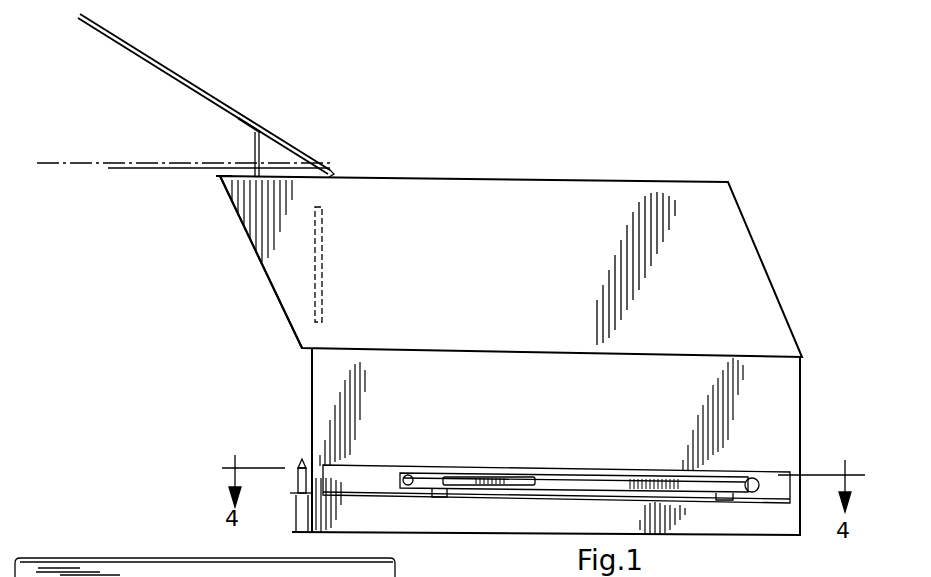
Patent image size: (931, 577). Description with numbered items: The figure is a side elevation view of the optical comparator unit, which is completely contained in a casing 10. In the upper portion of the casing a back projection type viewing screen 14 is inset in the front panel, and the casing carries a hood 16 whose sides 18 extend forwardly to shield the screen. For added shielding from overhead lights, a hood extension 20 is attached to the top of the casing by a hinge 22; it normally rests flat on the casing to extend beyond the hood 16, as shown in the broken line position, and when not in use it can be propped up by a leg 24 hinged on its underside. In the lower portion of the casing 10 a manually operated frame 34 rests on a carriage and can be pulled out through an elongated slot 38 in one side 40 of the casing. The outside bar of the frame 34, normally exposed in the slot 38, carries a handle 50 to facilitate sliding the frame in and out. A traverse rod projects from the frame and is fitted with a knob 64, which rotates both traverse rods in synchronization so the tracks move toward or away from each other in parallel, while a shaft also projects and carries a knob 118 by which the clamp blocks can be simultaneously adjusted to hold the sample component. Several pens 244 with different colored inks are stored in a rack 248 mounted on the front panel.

The casing 10 is at (514, 355).
The back projection type viewing screen 14 is at (320, 267).
The hood 16 is at (229, 174).
The sides 18 is at (259, 256).
The hood extension 20 is at (198, 88).
The hinge 22 is at (331, 170).
The leg 24 is at (262, 136).
The frame 34 is at (574, 459).
The elongated slot 38 is at (372, 465).
The side 40 is at (792, 426).
The handle 50 is at (501, 477).
The knob 64 is at (754, 478).
The knob 118 is at (411, 474).
The pens 244 is at (300, 470).
The rack 248 is at (306, 532).